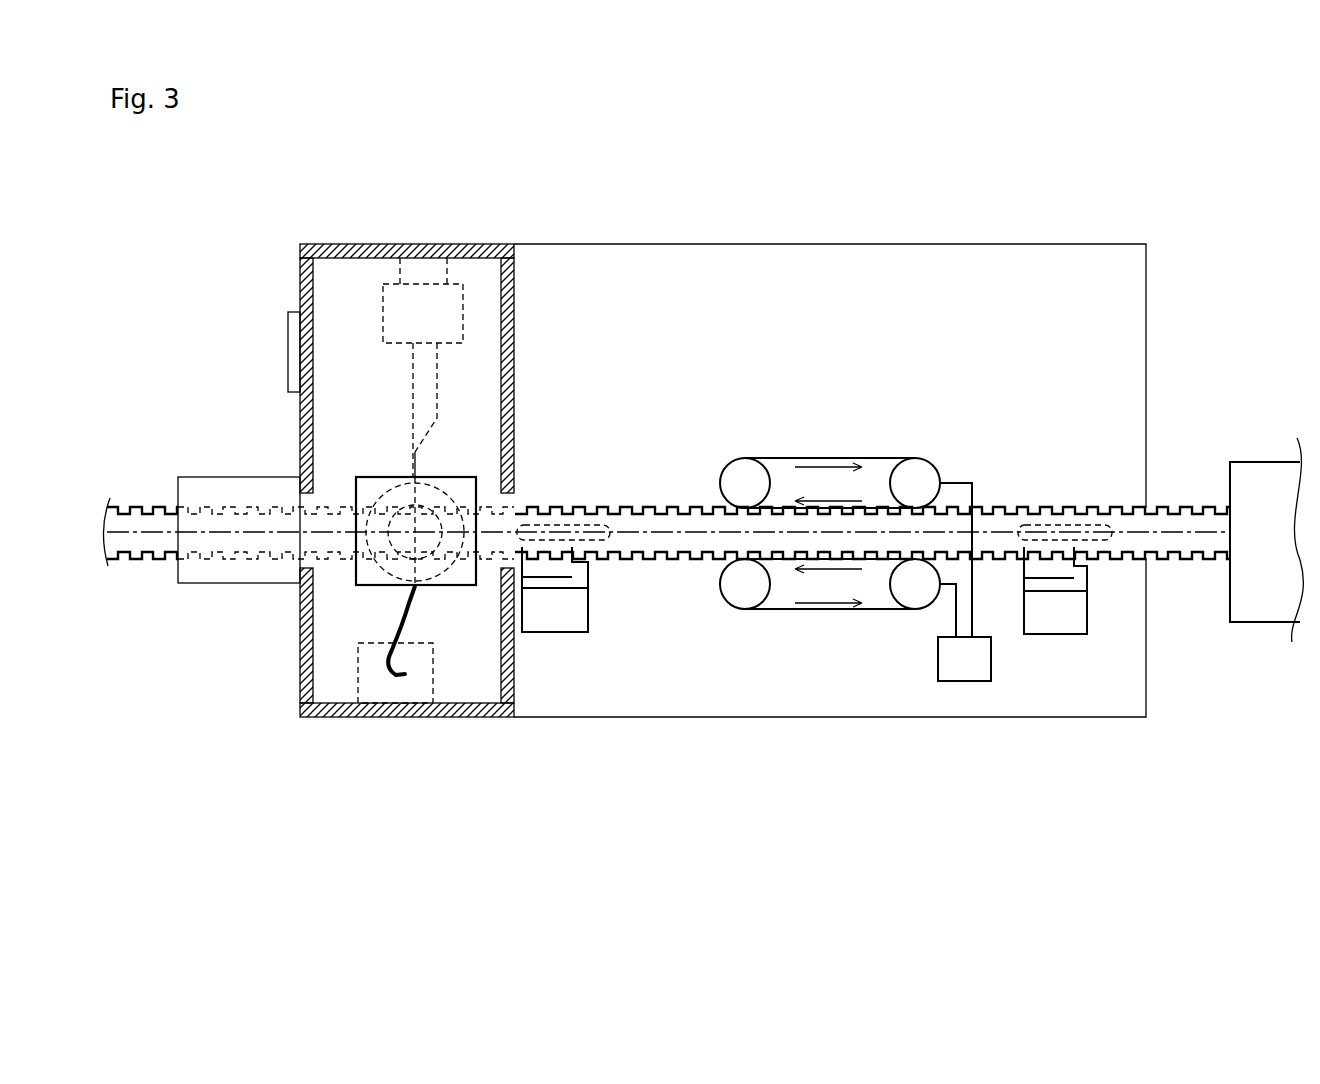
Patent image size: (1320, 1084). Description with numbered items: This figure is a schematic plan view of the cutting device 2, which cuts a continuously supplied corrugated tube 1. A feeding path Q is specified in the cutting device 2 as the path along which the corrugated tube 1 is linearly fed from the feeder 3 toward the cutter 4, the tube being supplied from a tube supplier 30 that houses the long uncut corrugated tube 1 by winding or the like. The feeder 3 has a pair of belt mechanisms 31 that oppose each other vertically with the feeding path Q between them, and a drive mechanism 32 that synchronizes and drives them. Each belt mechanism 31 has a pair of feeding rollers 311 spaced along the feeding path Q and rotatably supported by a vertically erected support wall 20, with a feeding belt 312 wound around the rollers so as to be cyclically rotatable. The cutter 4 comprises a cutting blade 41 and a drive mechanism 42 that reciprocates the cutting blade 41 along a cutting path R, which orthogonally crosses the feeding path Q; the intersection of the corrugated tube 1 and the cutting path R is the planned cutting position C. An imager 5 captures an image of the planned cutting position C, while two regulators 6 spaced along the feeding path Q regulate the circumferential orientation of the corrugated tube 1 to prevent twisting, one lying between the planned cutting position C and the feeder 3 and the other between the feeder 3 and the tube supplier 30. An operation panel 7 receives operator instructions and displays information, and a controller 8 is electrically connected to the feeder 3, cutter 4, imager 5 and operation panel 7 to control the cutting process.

The corrugated tube 1 is at (1032, 507).
The cutting device 2 is at (1126, 218).
The support wall 20 is at (1146, 295).
The feeder 3 is at (841, 393).
The belt mechanism 31 is at (833, 550).
The feeding roller 311 is at (745, 458).
The feeding belt 312 is at (815, 458).
The drive mechanism 32 is at (965, 681).
The cutter 4 is at (346, 355).
The cutting blade 41 is at (413, 378).
The drive mechanism 42 is at (383, 320).
The imager 5 is at (356, 567).
The regulator 6 is at (553, 632).
The operation panel 7 is at (288, 352).
The controller 8 is at (433, 680).
The tube supplier 30 is at (1255, 622).
The cutting path R is at (415, 475).
The planned cutting position C is at (428, 543).
The feeding path Q is at (650, 535).